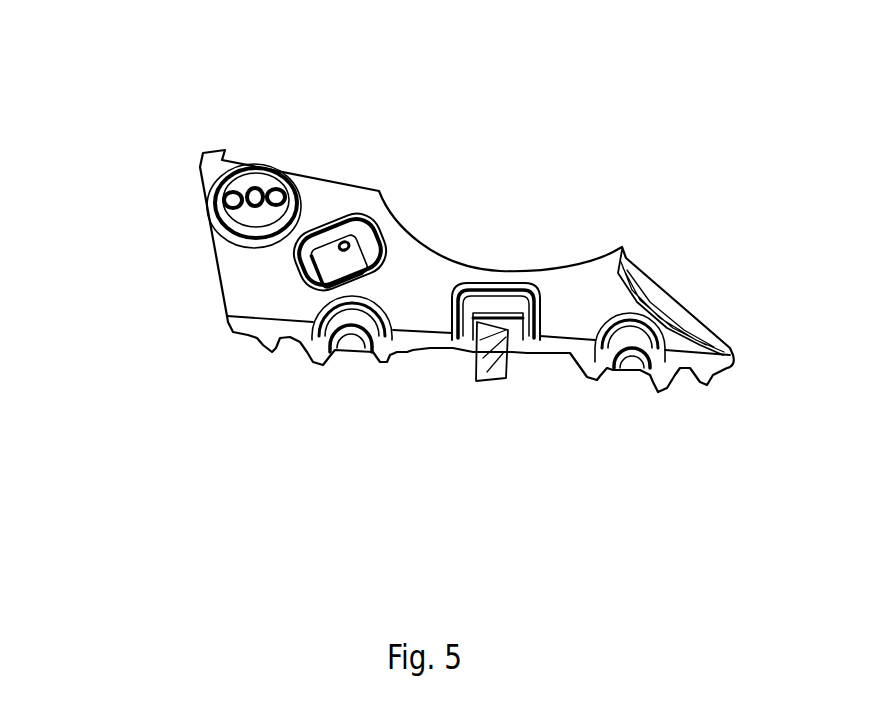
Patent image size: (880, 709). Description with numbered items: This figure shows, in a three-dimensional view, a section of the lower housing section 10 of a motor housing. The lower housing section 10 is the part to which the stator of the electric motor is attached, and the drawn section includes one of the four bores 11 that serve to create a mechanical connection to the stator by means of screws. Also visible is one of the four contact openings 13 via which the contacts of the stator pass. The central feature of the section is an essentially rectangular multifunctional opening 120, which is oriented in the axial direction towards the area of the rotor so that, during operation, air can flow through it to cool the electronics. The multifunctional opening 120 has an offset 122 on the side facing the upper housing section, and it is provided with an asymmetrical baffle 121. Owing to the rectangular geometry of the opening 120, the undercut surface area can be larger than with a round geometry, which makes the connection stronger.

The lower housing section 10 is at (705, 201).
The bore 11 is at (332, 358).
The contact opening 13 is at (208, 185).
The multifunctional opening 120 is at (528, 270).
The baffle 121 is at (495, 355).
The offset 122 is at (495, 318).